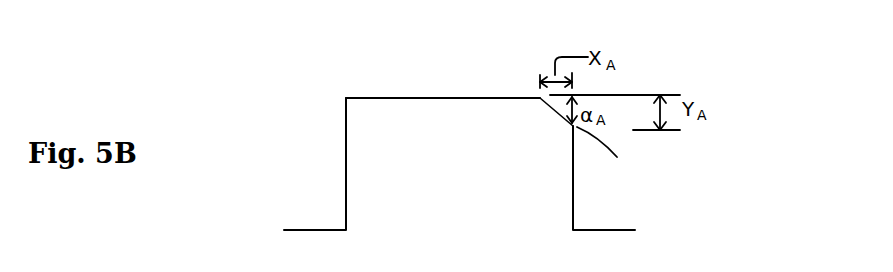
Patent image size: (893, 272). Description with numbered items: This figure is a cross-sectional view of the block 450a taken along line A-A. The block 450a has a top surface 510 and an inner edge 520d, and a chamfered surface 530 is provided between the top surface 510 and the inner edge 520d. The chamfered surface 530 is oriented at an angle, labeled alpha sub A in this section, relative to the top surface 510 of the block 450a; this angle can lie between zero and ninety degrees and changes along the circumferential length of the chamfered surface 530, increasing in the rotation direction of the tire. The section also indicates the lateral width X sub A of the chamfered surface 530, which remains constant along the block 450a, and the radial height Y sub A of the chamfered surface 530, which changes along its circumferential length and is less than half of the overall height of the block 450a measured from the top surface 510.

The block 450a is at (455, 167).
The top surface 510 is at (445, 97).
The chamfered surface 530 is at (558, 108).
The inner edge 520d is at (574, 197).